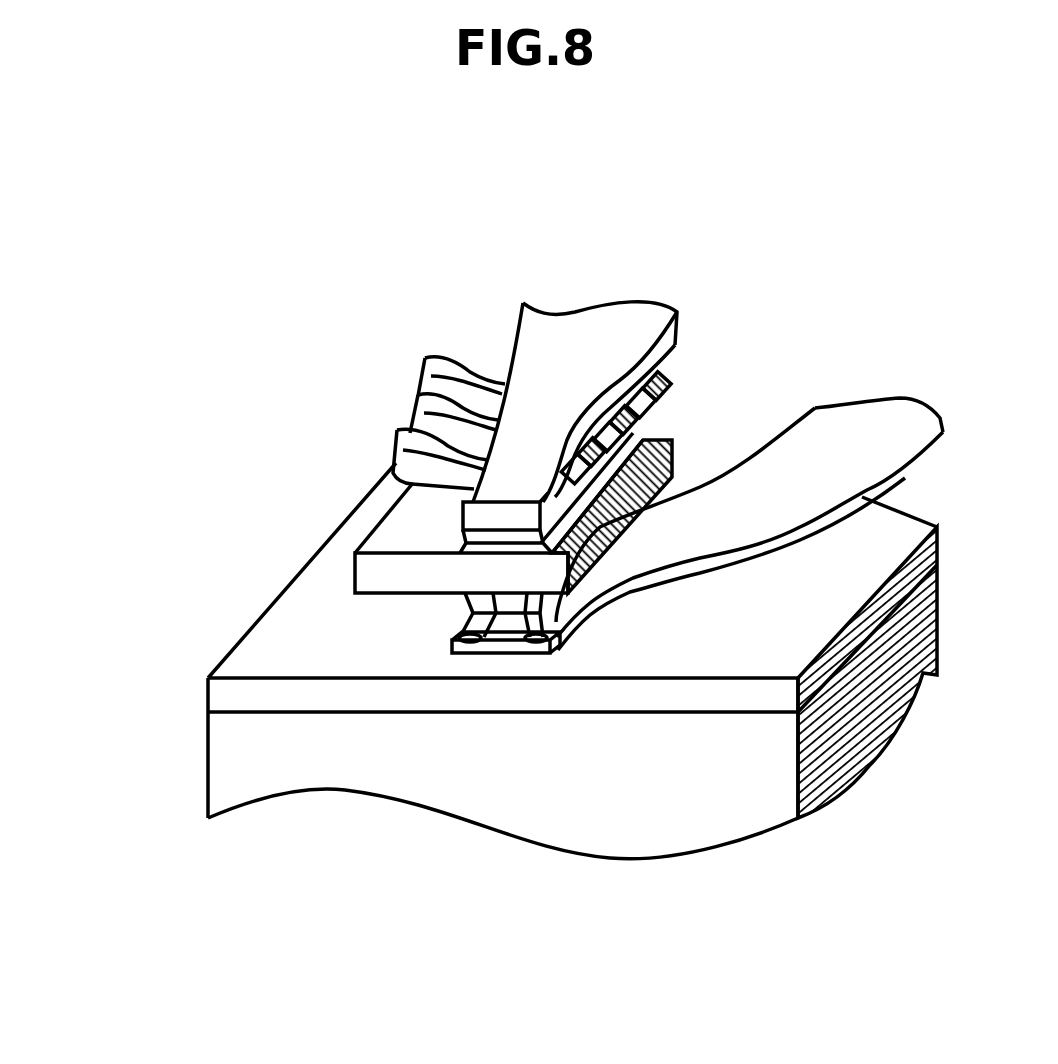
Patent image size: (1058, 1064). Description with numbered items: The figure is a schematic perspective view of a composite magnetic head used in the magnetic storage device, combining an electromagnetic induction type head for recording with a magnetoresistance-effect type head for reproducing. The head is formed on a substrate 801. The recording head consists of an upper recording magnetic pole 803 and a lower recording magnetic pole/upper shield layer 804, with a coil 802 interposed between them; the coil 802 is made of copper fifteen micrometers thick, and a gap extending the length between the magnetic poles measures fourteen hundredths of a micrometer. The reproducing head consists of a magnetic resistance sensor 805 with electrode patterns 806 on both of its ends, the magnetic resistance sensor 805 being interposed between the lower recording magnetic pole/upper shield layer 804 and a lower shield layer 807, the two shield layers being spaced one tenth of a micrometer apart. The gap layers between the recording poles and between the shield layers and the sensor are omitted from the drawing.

The substrate 801 is at (243, 757).
The coil 802 is at (418, 383).
The upper recording magnetic pole 803 is at (470, 510).
The lower recording magnetic pole/upper shield layer 804 is at (353, 571).
The magnetic resistance sensor 805 is at (497, 645).
The electrode patterns 806 is at (465, 617).
The lower shield layer 807 is at (243, 692).